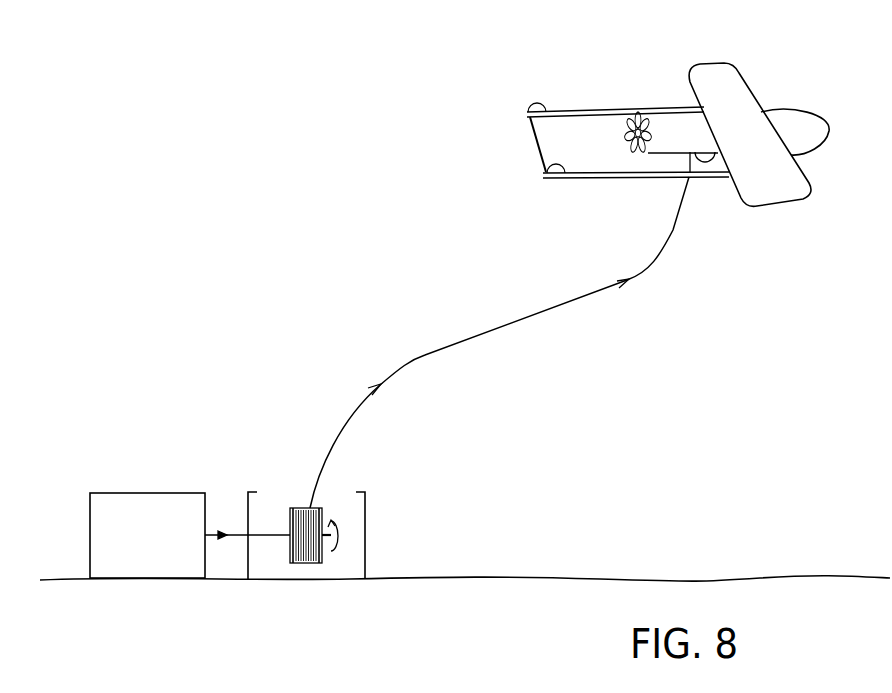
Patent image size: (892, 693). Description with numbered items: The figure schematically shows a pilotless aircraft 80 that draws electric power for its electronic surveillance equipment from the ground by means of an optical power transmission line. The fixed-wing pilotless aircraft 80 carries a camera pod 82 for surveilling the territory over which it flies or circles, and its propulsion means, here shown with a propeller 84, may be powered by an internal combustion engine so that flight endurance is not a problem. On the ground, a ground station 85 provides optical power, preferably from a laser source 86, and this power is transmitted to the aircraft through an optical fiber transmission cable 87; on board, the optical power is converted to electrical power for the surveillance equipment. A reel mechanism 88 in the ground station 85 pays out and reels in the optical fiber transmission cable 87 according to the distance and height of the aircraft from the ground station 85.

The pilotless aircraft 80 is at (678, 127).
The camera pod 82 is at (717, 178).
The propeller 84 is at (630, 124).
The ground station 85 is at (365, 545).
The laser source 86 is at (113, 492).
The optical fiber transmission cable 87 is at (507, 330).
The reel mechanism 88 is at (299, 507).